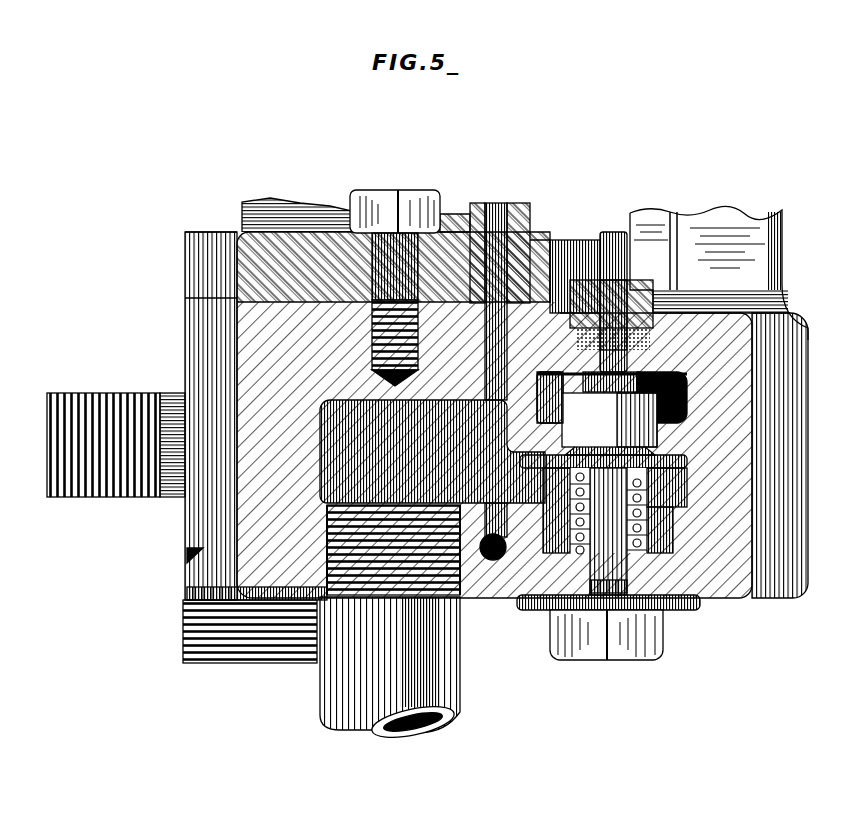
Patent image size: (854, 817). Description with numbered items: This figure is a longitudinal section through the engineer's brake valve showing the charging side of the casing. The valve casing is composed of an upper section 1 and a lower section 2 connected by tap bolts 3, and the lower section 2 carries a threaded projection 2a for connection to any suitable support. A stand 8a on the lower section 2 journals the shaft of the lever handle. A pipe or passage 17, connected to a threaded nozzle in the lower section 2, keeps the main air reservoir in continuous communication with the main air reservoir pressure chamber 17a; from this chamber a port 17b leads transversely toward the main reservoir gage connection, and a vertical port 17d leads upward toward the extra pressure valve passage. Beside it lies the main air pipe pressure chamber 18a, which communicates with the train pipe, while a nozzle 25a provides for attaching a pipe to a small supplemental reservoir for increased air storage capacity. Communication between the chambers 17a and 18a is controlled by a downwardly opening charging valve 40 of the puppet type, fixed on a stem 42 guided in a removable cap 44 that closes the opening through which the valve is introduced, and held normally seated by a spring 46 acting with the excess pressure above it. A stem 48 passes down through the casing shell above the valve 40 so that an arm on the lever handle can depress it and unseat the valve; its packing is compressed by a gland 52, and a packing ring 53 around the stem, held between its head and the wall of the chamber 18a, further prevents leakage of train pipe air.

The upper section 1 is at (393, 250).
The lower section 2 is at (496, 416).
The threaded projection 2a is at (116, 430).
The tap bolts 3 is at (395, 288).
The stand 8a is at (719, 273).
The pipe or passage 17 is at (390, 670).
The main air reservoir pressure chamber 17a is at (503, 497).
The port or passage 17b is at (516, 549).
The vertical port or passage 17d is at (487, 372).
The main air pipe pressure chamber 18a is at (578, 380).
The nozzle or connection 25a is at (185, 640).
The charging valve 40 is at (600, 452).
The stem 42 is at (608, 530).
The removable cap 44 is at (608, 613).
The spring 46 is at (615, 510).
The stem 48 is at (607, 242).
The gland 52 is at (628, 292).
The packing ring 53 is at (632, 368).